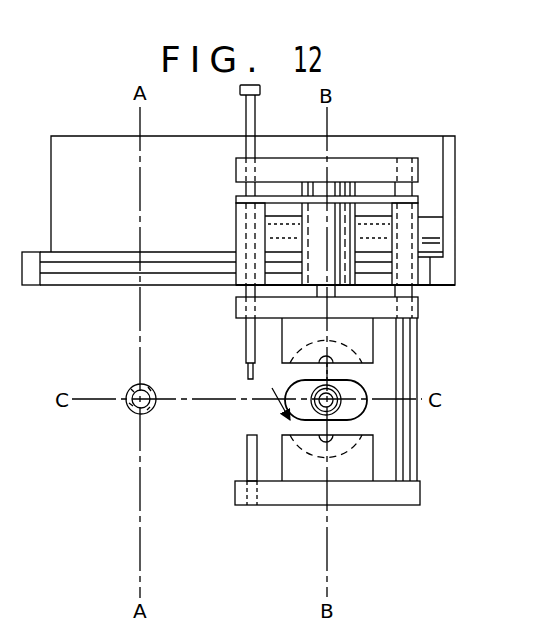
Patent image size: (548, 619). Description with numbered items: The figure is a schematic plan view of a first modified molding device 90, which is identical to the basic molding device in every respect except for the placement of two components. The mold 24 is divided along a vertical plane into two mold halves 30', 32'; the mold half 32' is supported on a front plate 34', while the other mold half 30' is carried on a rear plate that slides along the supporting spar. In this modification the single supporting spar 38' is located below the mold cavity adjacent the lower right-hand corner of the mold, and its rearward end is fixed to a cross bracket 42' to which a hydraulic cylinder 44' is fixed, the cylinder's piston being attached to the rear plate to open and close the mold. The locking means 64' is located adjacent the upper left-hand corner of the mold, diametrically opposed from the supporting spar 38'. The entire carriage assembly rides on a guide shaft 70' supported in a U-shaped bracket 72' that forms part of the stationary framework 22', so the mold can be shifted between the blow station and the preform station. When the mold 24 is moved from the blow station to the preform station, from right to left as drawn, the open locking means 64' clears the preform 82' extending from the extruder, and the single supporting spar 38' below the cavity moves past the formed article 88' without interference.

The stationary framework 22' is at (253, 194).
The first modified molding device 90 is at (200, 130).
The cross bracket 42' is at (327, 144).
The hydraulic cylinder 44' is at (337, 196).
The guide shaft 70' is at (138, 288).
The U-shaped bracket 72' is at (30, 288).
The mold half 30' is at (287, 340).
The mold 24 is at (302, 370).
The preform 82' is at (124, 383).
The locking means 64' is at (243, 411).
The formed article 88' is at (369, 392).
The supporting spar 38' is at (427, 399).
The mold half 32' is at (321, 488).
The front plate 34' is at (327, 511).